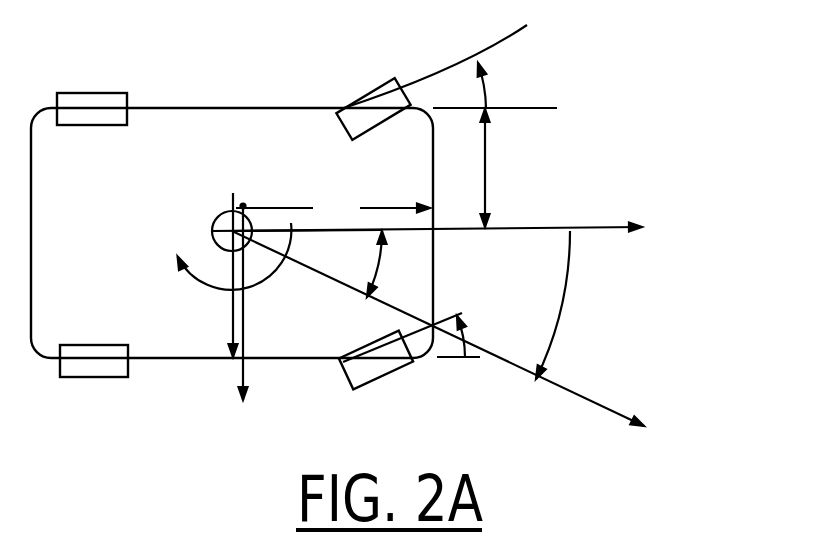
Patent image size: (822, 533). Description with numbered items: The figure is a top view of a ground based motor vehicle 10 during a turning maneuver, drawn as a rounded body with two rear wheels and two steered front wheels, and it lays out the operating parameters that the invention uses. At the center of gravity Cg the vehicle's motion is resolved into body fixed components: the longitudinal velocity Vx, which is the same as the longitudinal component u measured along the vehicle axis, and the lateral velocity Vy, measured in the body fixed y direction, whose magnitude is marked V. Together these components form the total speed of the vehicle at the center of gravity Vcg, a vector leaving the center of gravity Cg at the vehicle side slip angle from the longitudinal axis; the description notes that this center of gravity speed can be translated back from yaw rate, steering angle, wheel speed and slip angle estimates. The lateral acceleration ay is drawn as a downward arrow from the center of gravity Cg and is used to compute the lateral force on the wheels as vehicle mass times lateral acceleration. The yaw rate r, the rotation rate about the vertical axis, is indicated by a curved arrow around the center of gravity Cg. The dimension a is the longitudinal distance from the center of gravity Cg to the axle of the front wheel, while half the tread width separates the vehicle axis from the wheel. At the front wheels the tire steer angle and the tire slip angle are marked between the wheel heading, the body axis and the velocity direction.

The motor vehicle 10 is at (592, 135).
The center of gravity Cg is at (222, 211).
The longitudinal velocity Vx is at (475, 219).
The longitudinal velocity component u is at (307, 246).
The speed of vehicle at center of gravity Vcg is at (462, 337).
The lateral velocity Vy is at (215, 275).
The lateral acceleration ay is at (245, 322).
The longitudinal distance from center of gravity to axle a is at (333, 208).
The yaw rate r is at (243, 260).
The lateral velocity magnitude V is at (591, 305).